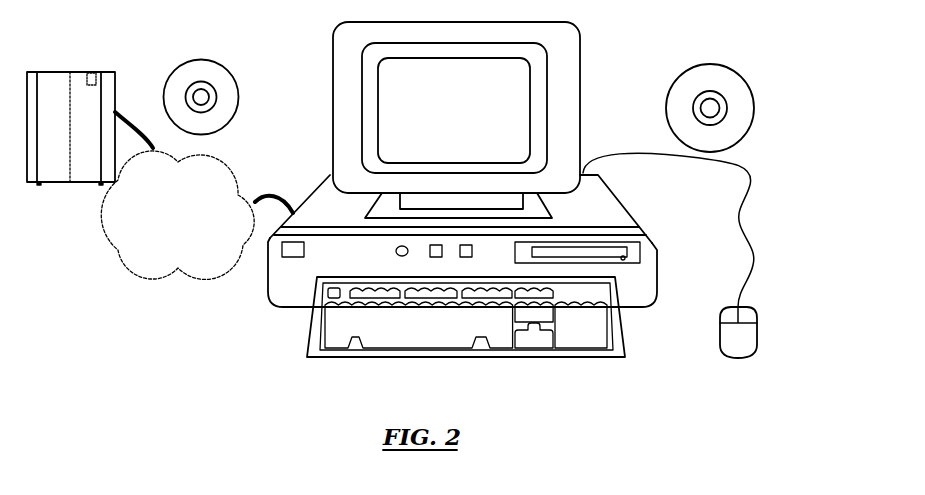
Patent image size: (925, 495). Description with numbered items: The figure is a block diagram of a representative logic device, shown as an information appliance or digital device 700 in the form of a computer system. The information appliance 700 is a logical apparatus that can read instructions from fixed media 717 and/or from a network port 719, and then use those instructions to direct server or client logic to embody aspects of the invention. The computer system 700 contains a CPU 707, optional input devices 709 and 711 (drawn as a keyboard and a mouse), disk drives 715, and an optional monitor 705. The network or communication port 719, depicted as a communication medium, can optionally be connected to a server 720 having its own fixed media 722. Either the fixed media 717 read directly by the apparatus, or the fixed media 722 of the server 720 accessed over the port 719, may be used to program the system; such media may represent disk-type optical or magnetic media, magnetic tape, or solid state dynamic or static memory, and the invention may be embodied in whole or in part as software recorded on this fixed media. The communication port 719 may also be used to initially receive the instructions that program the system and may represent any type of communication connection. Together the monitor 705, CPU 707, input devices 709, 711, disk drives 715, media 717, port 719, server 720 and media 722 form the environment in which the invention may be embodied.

The information appliance 700 is at (636, 34).
The monitor 705 is at (510, 90).
The CPU 707 is at (617, 210).
The input device 709 is at (373, 358).
The input device 711 is at (757, 329).
The disk drives 715 is at (642, 256).
The fixed media 717 is at (745, 78).
The network port 719 is at (265, 192).
The server 720 is at (93, 72).
The fixed media 722 is at (233, 70).